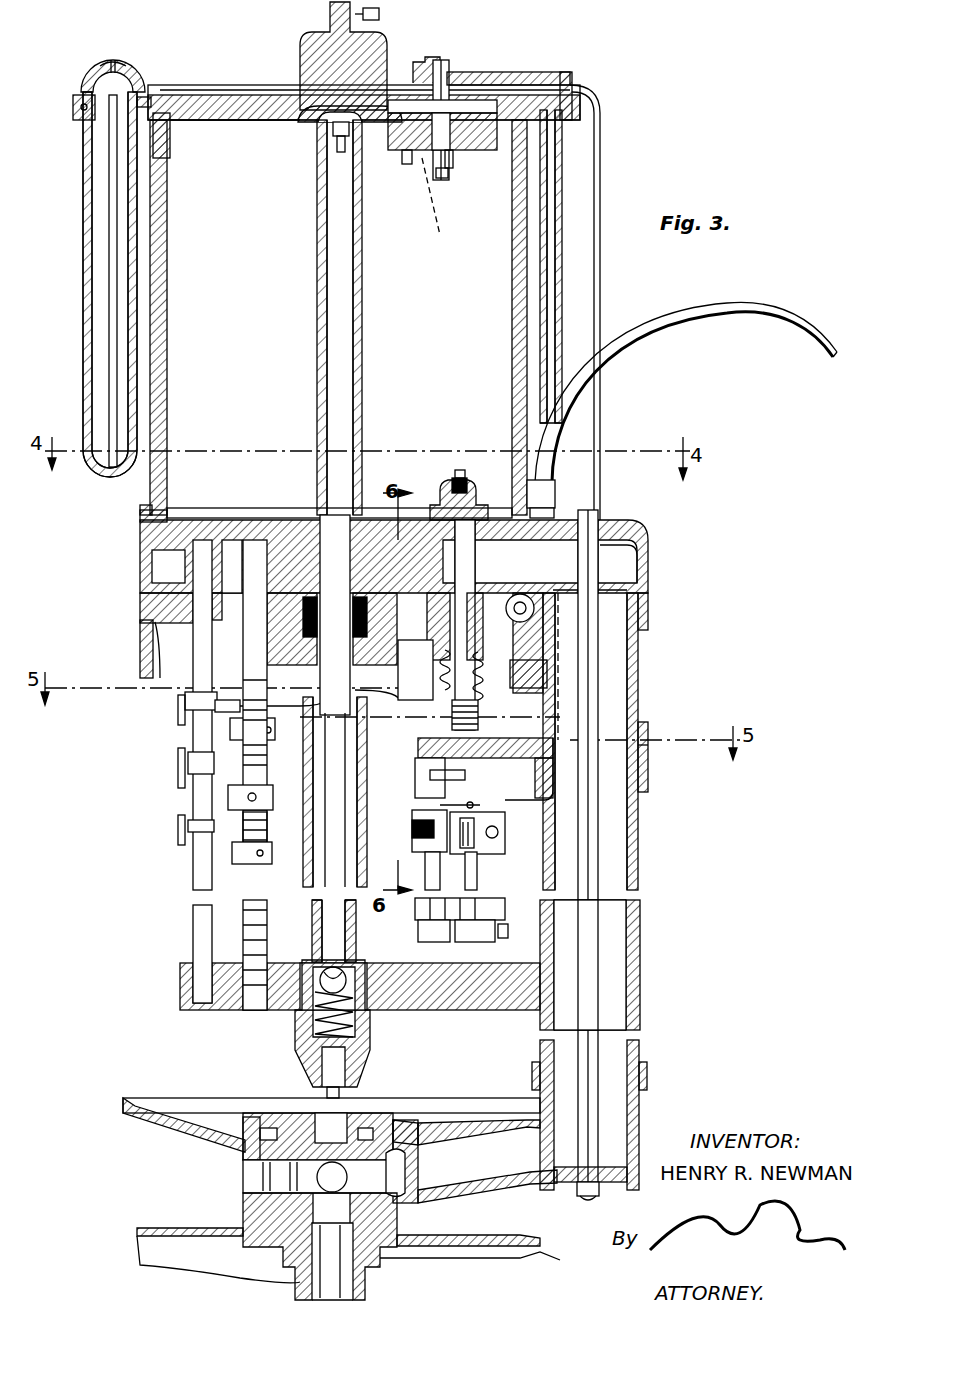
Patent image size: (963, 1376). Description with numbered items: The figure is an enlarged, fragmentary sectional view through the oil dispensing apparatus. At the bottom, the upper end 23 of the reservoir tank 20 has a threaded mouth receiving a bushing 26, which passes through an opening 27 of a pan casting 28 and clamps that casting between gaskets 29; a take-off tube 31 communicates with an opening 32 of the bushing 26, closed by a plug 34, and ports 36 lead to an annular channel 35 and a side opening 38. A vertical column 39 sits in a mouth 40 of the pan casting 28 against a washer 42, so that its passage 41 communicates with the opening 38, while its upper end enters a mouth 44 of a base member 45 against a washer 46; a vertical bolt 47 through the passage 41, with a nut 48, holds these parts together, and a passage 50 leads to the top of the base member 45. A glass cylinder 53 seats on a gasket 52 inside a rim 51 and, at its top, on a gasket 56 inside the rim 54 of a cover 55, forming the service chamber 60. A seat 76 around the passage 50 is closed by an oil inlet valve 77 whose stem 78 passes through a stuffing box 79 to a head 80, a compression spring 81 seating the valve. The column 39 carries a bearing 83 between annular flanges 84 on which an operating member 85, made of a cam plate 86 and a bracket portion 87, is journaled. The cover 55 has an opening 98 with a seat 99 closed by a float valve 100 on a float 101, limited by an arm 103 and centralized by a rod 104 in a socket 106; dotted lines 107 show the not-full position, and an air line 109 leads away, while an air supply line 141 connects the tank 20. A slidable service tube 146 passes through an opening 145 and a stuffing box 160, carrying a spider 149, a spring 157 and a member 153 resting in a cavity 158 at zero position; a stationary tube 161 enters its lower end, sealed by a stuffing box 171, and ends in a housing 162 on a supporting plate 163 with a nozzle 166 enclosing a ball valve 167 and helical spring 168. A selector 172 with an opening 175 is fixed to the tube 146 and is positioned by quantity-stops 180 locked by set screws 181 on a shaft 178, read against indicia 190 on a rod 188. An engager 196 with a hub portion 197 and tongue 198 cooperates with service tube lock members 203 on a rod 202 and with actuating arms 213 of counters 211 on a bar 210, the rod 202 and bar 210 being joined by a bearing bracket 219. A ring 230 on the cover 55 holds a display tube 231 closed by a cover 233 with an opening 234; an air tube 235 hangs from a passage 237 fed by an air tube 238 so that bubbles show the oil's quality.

The reservoir tank 20 is at (520, 1252).
The upper end of the reservoir tank 23 is at (170, 1236).
The bushing 26 is at (280, 1221).
The opening of the pan casting 27 is at (245, 1150).
The pan casting 28 is at (170, 1130).
The gaskets 29 is at (420, 1125).
The take-off tube 31 is at (365, 1290).
The opening of the bushing 32 is at (280, 1178).
The plug 34 is at (320, 1120).
The annular channel 35 is at (405, 1175).
The ports 36 is at (395, 1120).
The opening of the pan casting 38 is at (540, 1170).
The vertical column 39 is at (640, 995).
The mouth of the pan casting 40 is at (640, 1080).
The passage of the column 41 is at (610, 980).
The washer 42 is at (640, 1112).
The mouth of the base member 44 is at (648, 612).
The base member 45 is at (630, 568).
The washer 46 is at (640, 592).
The vertical bolt 47 is at (600, 870).
The nut 48 is at (600, 1194).
The passage of the base member 50 is at (640, 532).
The rim 51 is at (140, 514).
The gasket 52 is at (172, 518).
The glass cylinder 53 is at (168, 365).
The rim of the cover 54 is at (168, 150).
The cover 55 is at (240, 122).
The gasket 56 is at (165, 98).
The service chamber 60 is at (217, 263).
The seat 76 is at (432, 510).
The oil inlet valve 77 is at (487, 510).
The stem of the valve 78 is at (476, 568).
The stuffing box 79 is at (422, 652).
The head 80 is at (440, 715).
The compression spring 81 is at (445, 688).
The bearing 83 is at (648, 770).
The annular flanges 84 is at (646, 728).
The operating member 85 is at (545, 718).
The cam plate 86 is at (510, 760).
The bracket portion 87 is at (648, 747).
The opening of the cover 98 is at (555, 74).
The seat 99 is at (413, 70).
The float valve 100 is at (448, 100).
The float 101 is at (392, 150).
The arm 103 is at (407, 165).
The rod 104 is at (453, 160).
The socket 106 is at (445, 180).
The dotted-line positions of the float and float valve 107 is at (442, 205).
The air line 109 is at (563, 245).
The air supply line 141 is at (682, 322).
The opening of the base member 145 is at (305, 520).
The service tube 146 is at (317, 383).
The spider 149 is at (340, 152).
The member 153 is at (318, 125).
The spring 157 is at (333, 128).
The cavity 158 is at (380, 50).
The stuffing box 160 is at (283, 628).
The stationary tube 161 is at (367, 855).
The housing 162 is at (357, 968).
The supporting plate 163 is at (490, 1000).
The nozzle 166 is at (300, 1055).
The ball valve 167 is at (343, 968).
The helical spring 168 is at (370, 1030).
The stuffing box 171 is at (305, 835).
The selector 172 is at (271, 721).
The opening 175 is at (300, 745).
The shaft 178 is at (225, 1010).
The quantity-stops 180 is at (228, 796).
The set screws 181 is at (250, 800).
The rod 188 is at (192, 940).
The indicia 190 is at (188, 762).
The engager 196 is at (428, 760).
The hub portion 197 is at (273, 825).
The tongue 198 is at (386, 740).
The rod 202 is at (477, 880).
The service tube lock members 203 is at (480, 805).
The bar 210 is at (490, 868).
The counters 211 is at (505, 908).
The actuating arms 213 is at (420, 820).
The bearing bracket 219 is at (455, 942).
The ring 230 is at (80, 106).
The display tube 231 is at (84, 212).
The cover 233 is at (150, 48).
The opening 234 is at (108, 62).
The air tube 235 is at (110, 325).
The passage 237 is at (145, 98).
The air tube 238 is at (195, 92).